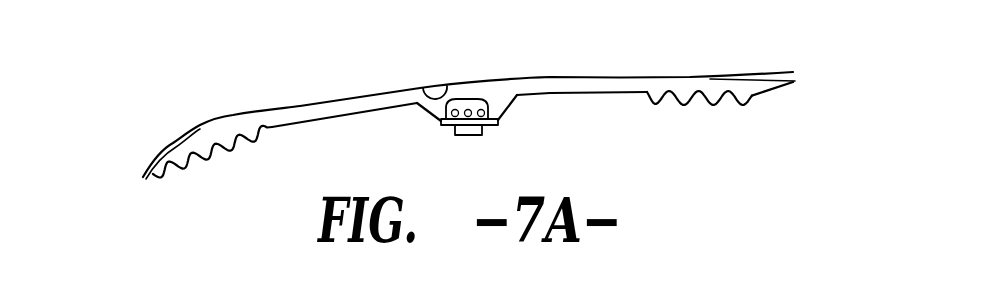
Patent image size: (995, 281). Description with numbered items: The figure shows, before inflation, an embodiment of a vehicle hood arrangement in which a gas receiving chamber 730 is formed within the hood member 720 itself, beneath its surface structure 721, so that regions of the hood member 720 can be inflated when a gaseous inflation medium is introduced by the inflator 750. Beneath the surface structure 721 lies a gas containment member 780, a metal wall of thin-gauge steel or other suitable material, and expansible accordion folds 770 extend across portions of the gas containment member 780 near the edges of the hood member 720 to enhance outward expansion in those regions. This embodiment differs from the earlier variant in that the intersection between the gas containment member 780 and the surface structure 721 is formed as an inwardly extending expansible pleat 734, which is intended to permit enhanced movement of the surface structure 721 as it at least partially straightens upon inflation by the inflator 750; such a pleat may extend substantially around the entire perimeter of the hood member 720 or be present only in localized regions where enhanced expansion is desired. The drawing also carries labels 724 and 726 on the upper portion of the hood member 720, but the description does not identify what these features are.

The hood member 720 is at (466, 119).
The surface structure 721 is at (276, 103).
The rear lower edge 724 is at (573, 76).
The pivot aperture 726 is at (444, 86).
The gas receiving chamber 730 is at (752, 94).
The expansible pleat 734 is at (133, 127).
The inflator 750 is at (482, 135).
The accordion folds 770 is at (217, 148).
The gas containment member 780 is at (317, 120).